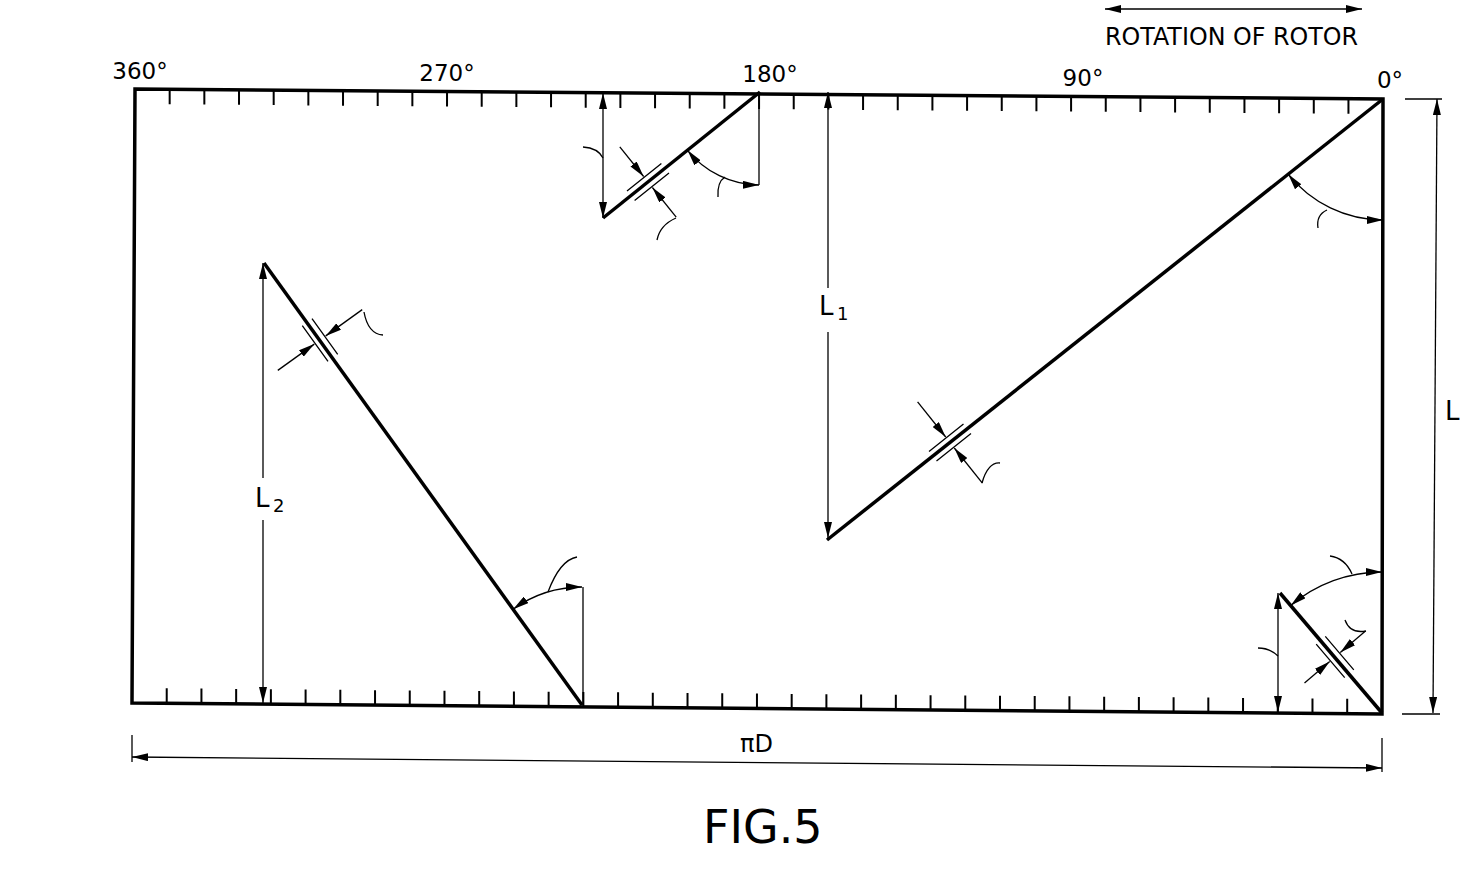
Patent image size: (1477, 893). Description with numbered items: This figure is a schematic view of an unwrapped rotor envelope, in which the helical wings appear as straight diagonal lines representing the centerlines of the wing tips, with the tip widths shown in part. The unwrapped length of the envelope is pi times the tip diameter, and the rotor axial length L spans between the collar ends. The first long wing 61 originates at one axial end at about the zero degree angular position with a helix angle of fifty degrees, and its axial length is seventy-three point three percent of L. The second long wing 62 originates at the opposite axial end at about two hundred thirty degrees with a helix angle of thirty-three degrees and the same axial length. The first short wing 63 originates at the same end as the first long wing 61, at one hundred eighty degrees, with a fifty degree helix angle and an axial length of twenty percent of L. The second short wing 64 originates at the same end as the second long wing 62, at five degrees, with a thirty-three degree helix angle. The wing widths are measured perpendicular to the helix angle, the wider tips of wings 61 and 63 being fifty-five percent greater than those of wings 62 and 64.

The first long wing 61 is at (1185, 257).
The second long wing 62 is at (432, 494).
The first short wing 63 is at (703, 138).
The second short wing 64 is at (1280, 593).